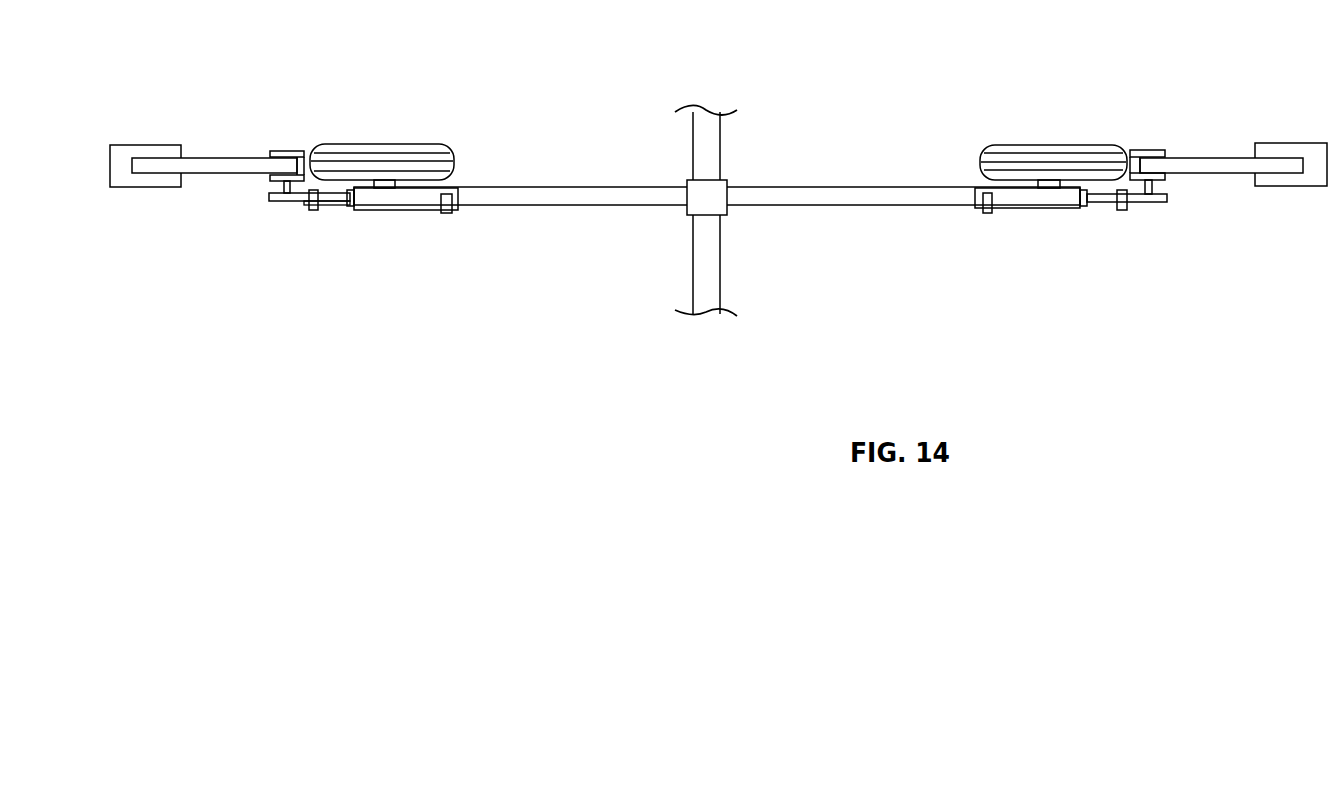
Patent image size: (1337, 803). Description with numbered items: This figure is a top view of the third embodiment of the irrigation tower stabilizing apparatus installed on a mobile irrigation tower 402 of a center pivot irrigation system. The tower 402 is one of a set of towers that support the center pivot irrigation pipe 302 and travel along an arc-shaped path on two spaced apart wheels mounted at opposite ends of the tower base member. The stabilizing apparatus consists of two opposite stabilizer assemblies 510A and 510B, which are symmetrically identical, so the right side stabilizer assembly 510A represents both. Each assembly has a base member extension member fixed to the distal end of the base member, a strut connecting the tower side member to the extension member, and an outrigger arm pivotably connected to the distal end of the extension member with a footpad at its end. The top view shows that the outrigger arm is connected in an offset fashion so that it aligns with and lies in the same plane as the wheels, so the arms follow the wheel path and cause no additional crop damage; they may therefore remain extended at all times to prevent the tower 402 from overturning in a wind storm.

The center pivot irrigation pipe 302 is at (720, 287).
The mobile irrigation tower 402 is at (842, 155).
The right side stabilizer assembly 510A is at (1215, 99).
The left side stabilizer assembly 510B is at (220, 137).